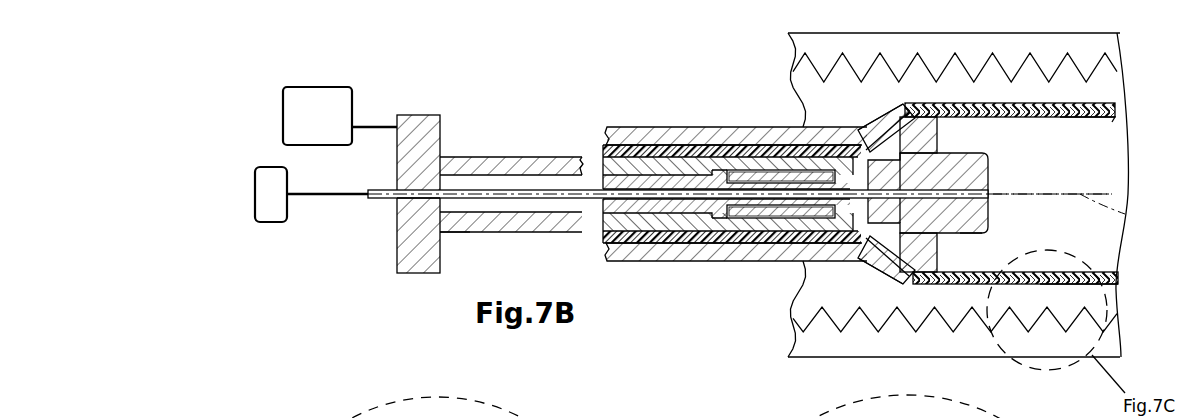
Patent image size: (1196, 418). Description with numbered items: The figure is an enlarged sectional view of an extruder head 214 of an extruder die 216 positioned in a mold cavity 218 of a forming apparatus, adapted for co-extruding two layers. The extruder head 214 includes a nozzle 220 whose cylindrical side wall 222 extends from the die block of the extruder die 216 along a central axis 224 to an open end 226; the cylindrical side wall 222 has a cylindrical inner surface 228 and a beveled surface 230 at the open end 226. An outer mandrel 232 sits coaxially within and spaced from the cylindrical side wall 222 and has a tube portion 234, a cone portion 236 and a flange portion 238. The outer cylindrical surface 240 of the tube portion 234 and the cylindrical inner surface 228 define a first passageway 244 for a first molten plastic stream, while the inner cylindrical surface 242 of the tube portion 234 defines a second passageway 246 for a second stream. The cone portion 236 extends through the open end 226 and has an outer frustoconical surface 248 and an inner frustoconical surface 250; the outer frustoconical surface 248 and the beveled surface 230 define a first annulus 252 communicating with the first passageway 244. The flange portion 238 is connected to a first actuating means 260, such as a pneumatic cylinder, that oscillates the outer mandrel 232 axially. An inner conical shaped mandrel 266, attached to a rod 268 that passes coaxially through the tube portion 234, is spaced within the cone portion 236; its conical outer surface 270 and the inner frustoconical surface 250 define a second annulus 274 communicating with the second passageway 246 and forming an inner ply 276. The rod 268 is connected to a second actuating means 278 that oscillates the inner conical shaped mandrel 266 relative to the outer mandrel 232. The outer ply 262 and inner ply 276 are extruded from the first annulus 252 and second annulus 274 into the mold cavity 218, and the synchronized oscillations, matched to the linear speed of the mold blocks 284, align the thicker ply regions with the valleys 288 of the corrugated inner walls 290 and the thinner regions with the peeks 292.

The extruder head 214 is at (703, 128).
The extruder die 216 is at (578, 128).
The mold cavity 218 is at (1110, 182).
The nozzle 220 is at (822, 262).
The cylindrical side wall 222 is at (645, 260).
The central axis 224 is at (1125, 214).
The open end 226 is at (948, 254).
The cylindrical inner surface 228 is at (623, 240).
The beveled surface 230 is at (878, 262).
The outer mandrel 232 is at (635, 167).
The tube portion 234 is at (523, 225).
The cone portion 236 is at (988, 232).
The flange portion 238 is at (420, 147).
The outer cylindrical surface 240 is at (470, 232).
The inner cylindrical surface 242 is at (440, 203).
The first passageway 244 is at (680, 150).
The second passageway 246 is at (683, 205).
The outer frustoconical surface 248 is at (883, 272).
The inner frustoconical surface 250 is at (950, 162).
The first annulus 252 is at (872, 122).
The first actuating means 260 is at (333, 98).
The outer ply 262 is at (1095, 101).
The inner conical shaped mandrel 266 is at (958, 176).
The rod 268 is at (373, 188).
The conical outer surface 270 is at (868, 140).
The second annulus 274 is at (907, 110).
The inner ply 276 is at (1115, 127).
The second actuating means 278 is at (255, 188).
The mold blocks 284 is at (905, 337).
The valleys 288 is at (1073, 313).
The corrugated inner walls 290 is at (1110, 354).
The peeks 292 is at (1080, 308).